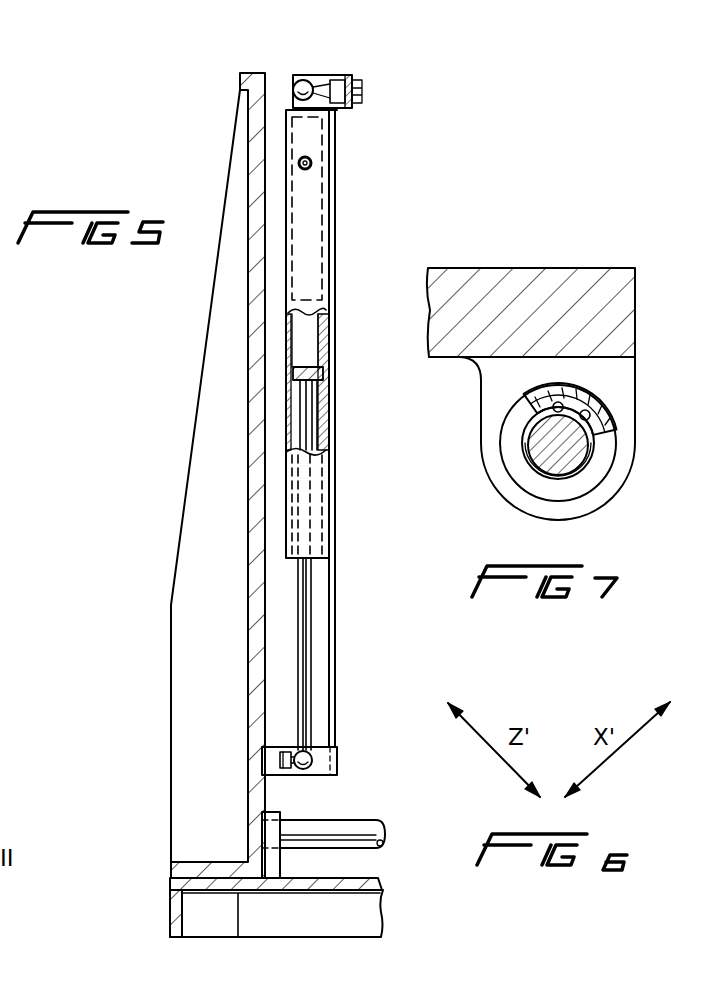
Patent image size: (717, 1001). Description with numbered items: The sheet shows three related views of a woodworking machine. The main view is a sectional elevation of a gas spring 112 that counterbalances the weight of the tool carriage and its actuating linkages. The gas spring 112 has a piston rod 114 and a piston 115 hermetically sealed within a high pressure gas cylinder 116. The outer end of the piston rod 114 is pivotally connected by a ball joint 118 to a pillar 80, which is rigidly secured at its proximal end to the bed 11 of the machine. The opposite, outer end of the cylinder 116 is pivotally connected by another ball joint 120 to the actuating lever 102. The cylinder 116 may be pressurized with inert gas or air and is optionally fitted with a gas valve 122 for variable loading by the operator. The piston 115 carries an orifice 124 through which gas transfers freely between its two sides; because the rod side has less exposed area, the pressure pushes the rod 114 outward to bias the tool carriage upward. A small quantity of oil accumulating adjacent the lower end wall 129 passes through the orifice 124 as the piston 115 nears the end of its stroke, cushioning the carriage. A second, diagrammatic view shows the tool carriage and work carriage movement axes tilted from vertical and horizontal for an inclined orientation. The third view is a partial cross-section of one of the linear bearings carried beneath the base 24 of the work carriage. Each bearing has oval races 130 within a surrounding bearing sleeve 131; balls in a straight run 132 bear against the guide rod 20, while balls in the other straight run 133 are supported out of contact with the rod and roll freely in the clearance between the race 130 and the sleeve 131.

In FIG. 5, the bed 11 is at (176, 897).
In FIG. 7, the guide rod 20 is at (575, 452).
In FIG. 7, the base 24 is at (637, 312).
In FIG. 5, the pillar 80 is at (250, 693).
In FIG. 5, the actuating lever 102 is at (352, 107).
In FIG. 5, the gas spring 112 is at (302, 243).
In FIG. 5, the piston rod 114 is at (314, 447).
In FIG. 5, the piston 115 is at (312, 373).
In FIG. 5, the gas cylinder 116 is at (332, 200).
In FIG. 5, the ball joint 118 is at (318, 757).
In FIG. 5, the ball joint 120 is at (305, 80).
In FIG. 5, the gas valve 122 is at (312, 163).
In FIG. 5, the orifice 124 is at (300, 365).
In FIG. 5, the lower end wall 129 is at (322, 560).
In FIG. 7, the oval race 130 is at (608, 418).
In FIG. 7, the bearing sleeve 131 is at (545, 392).
In FIG. 7, the straight run 132 is at (535, 415).
In FIG. 7, the straight run 133 is at (598, 437).